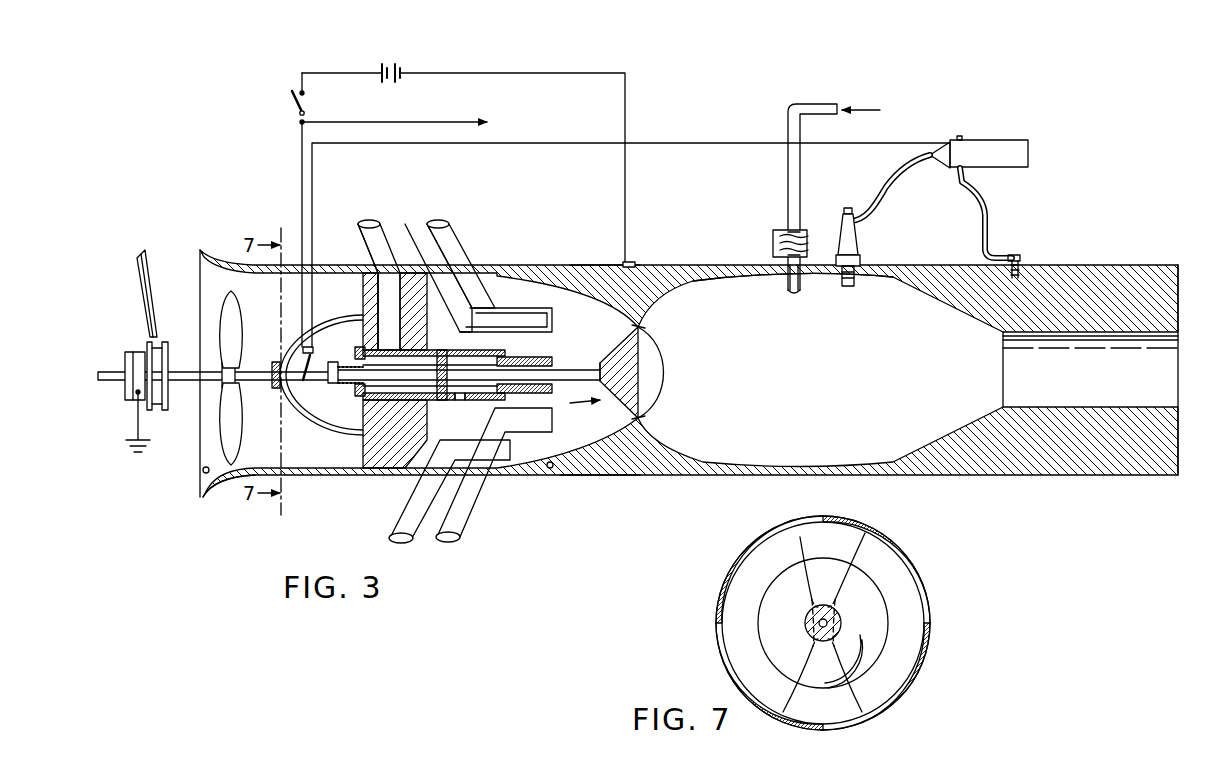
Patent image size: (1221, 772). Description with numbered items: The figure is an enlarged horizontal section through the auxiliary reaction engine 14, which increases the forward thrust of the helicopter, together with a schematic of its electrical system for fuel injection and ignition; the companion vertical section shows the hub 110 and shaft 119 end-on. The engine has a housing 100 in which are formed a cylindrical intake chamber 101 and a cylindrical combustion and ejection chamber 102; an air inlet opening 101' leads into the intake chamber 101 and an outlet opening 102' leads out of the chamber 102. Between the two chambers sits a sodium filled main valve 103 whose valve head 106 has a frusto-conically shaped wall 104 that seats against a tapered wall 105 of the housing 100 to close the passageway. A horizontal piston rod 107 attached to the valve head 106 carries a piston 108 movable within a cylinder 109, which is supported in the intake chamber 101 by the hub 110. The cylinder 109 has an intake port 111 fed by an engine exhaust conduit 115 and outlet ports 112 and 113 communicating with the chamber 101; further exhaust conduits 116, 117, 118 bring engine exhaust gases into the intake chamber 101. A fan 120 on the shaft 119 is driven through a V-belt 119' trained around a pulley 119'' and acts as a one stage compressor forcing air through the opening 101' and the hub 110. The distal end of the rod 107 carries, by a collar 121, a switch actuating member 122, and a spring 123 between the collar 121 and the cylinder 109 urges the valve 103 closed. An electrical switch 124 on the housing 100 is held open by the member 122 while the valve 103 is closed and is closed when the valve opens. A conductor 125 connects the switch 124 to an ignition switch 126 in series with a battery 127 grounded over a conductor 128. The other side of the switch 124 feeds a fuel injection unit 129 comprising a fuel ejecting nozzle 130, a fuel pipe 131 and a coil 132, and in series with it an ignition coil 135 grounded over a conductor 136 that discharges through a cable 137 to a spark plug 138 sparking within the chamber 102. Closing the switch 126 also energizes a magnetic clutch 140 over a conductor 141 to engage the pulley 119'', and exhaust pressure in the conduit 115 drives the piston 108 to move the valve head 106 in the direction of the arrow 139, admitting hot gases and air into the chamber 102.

In FIG. 3, the auxiliary reaction engine 14 is at (596, 486).
In FIG. 3, the housing 100 is at (1000, 472).
In FIG. 3, the intake chamber 101 is at (535, 489).
In FIG. 3, the air inlet opening 101' is at (179, 481).
In FIG. 3, the combustion and ejection chamber 102 is at (793, 392).
In FIG. 3, the outlet opening 102' is at (1112, 369).
In FIG. 3, the main valve 103 is at (668, 360).
In FIG. 3, the frusto-conically shaped wall 104 is at (645, 328).
In FIG. 3, the tapered wall 105 is at (612, 270).
In FIG. 3, the valve head 106 is at (645, 416).
In FIG. 3, the piston rod 107 is at (574, 366).
In FIG. 3, the piston 108 is at (442, 350).
In FIG. 3, the cylinder 109 is at (505, 352).
In FIG. 3, the hub 110 is at (360, 470).
In FIG. 7, the hub 110 is at (853, 538).
In FIG. 3, the intake port 111 is at (357, 348).
In FIG. 3, the outlet port 112 is at (485, 322).
In FIG. 3, the outlet port 113 is at (460, 400).
In FIG. 3, the engine exhaust conduit 115 is at (380, 228).
In FIG. 3, the engine exhaust conduit 116 is at (450, 228).
In FIG. 3, the engine exhaust conduit 117 is at (440, 527).
In FIG. 3, the engine exhaust conduit 118 is at (385, 525).
In FIG. 3, the shaft 119 is at (218, 378).
In FIG. 7, the shaft 119 is at (872, 622).
In FIG. 3, the V-belt 119' is at (162, 268).
In FIG. 3, the pulley 119'' is at (176, 404).
In FIG. 3, the fan 120 is at (228, 480).
In FIG. 3, the collar 121 is at (318, 370).
In FIG. 3, the switch actuating member 122 is at (308, 412).
In FIG. 3, the spring 123 is at (336, 385).
In FIG. 3, the electrical switch 124 is at (276, 362).
In FIG. 3, the conductor 125 is at (300, 176).
In FIG. 3, the ignition switch 126 is at (293, 112).
In FIG. 3, the battery 127 is at (398, 68).
In FIG. 3, the conductor 128 is at (625, 213).
In FIG. 3, the fuel injection unit 129 is at (770, 243).
In FIG. 3, the fuel ejecting nozzle 130 is at (792, 292).
In FIG. 3, the fuel pipe 131 is at (825, 102).
In FIG. 3, the coil 132 is at (806, 232).
In FIG. 3, the ignition coil 135 is at (1036, 155).
In FIG. 3, the conductor 136 is at (987, 238).
In FIG. 3, the cable 137 is at (882, 200).
In FIG. 3, the spark plug 138 is at (860, 256).
In FIG. 3, the arrow 139 is at (584, 404).
In FIG. 3, the magnetic clutch 140 is at (124, 356).
In FIG. 3, the conductor 141 is at (445, 122).